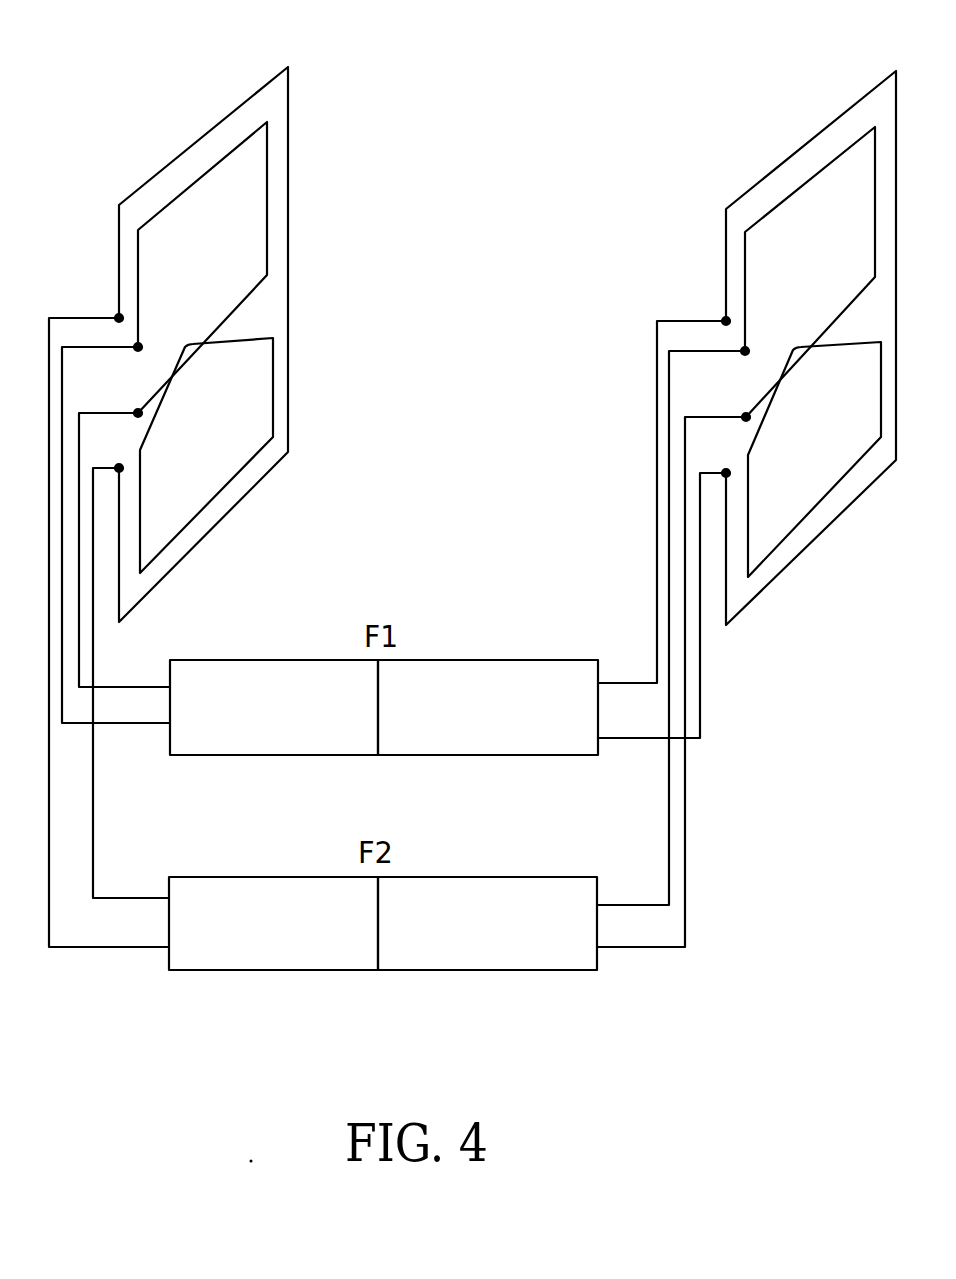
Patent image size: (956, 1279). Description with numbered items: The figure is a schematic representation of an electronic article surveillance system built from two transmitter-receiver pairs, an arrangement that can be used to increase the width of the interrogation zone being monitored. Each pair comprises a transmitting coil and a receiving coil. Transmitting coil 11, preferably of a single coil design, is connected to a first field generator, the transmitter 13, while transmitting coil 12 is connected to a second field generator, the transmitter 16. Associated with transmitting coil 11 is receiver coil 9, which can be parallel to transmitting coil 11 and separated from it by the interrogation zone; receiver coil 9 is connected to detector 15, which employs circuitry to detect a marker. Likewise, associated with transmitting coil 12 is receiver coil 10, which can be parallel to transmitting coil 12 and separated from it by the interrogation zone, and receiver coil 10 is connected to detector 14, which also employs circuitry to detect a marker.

The receiving coil 9 is at (182, 193).
The receiving coil 10 is at (790, 197).
The transmitting coil 11 is at (820, 132).
The transmitting coil 12 is at (213, 128).
The first field generator (transmitter) 13 is at (468, 658).
The detector 14 is at (452, 877).
The detector 15 is at (267, 658).
The second field generator (transmitter) 16 is at (307, 877).